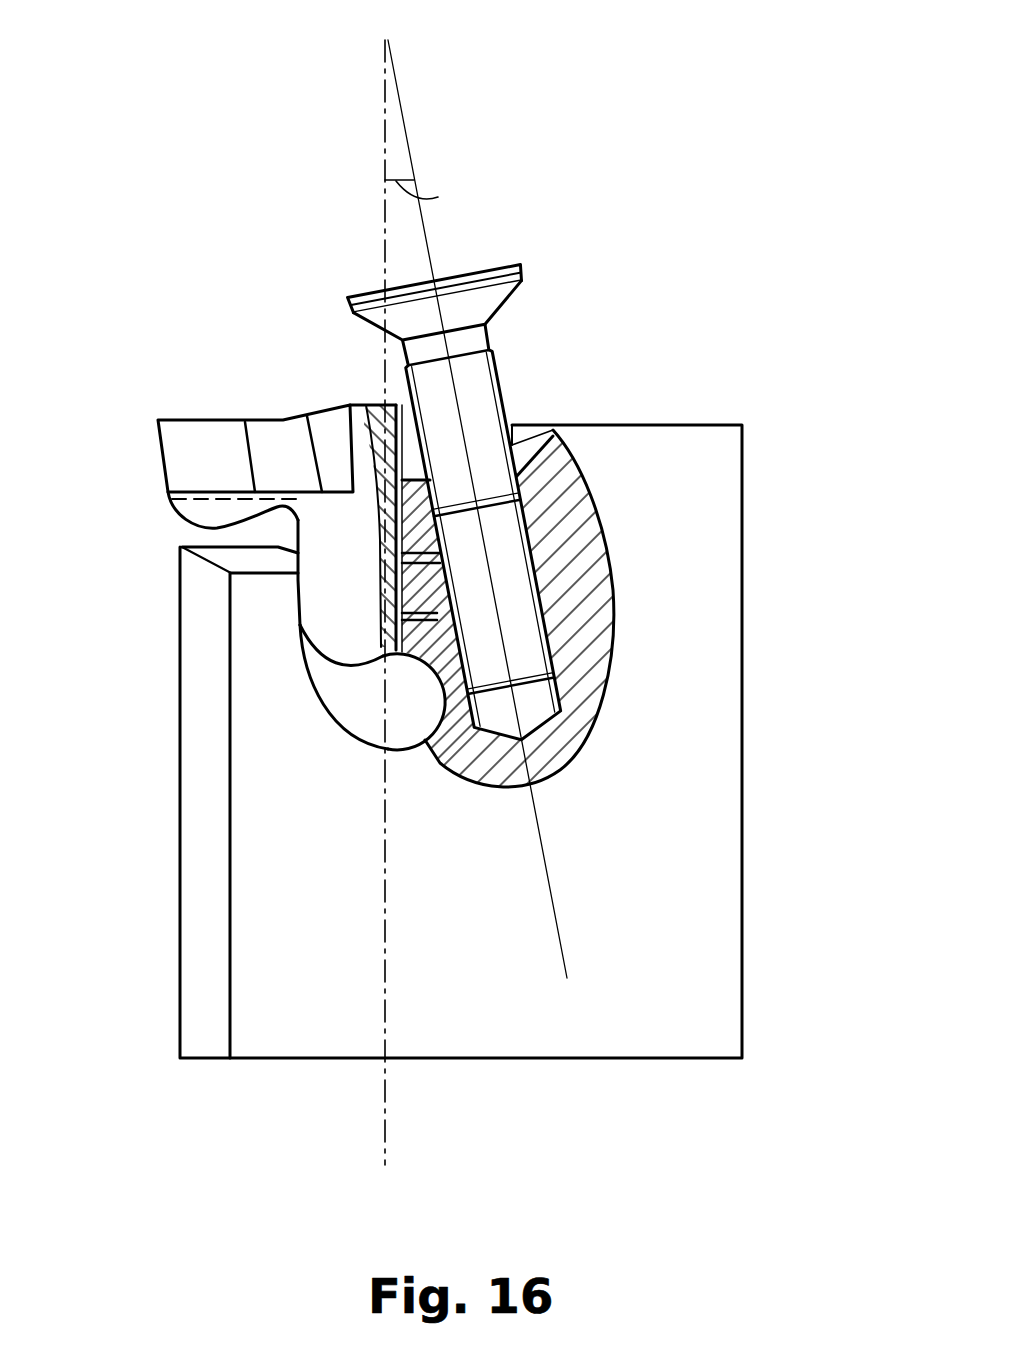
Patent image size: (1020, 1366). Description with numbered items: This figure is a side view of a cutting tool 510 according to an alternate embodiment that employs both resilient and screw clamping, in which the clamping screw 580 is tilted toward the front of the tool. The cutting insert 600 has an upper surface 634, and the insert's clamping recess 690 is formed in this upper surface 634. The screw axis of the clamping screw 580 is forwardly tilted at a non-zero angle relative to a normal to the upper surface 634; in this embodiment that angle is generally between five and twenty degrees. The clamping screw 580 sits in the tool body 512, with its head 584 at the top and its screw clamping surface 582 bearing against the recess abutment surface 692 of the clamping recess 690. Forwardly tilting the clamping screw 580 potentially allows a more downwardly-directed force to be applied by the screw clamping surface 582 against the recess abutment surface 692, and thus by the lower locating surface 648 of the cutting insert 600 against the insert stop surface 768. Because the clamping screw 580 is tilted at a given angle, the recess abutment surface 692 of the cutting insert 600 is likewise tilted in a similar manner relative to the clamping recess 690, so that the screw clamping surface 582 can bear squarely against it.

The cutting tool 510 is at (824, 231).
The base body / workpiece block 512 is at (655, 460).
The clamping screw 580 is at (562, 275).
The screw clamping surface 582 is at (348, 318).
The screw head 584 is at (485, 263).
The cutting insert 600 is at (200, 407).
The upper surface 634 is at (348, 404).
The lower locating surface 648 is at (205, 527).
The clamping recess 690 is at (400, 358).
The recess abutment surface 692 is at (387, 404).
The insert stop surface 768 is at (254, 562).